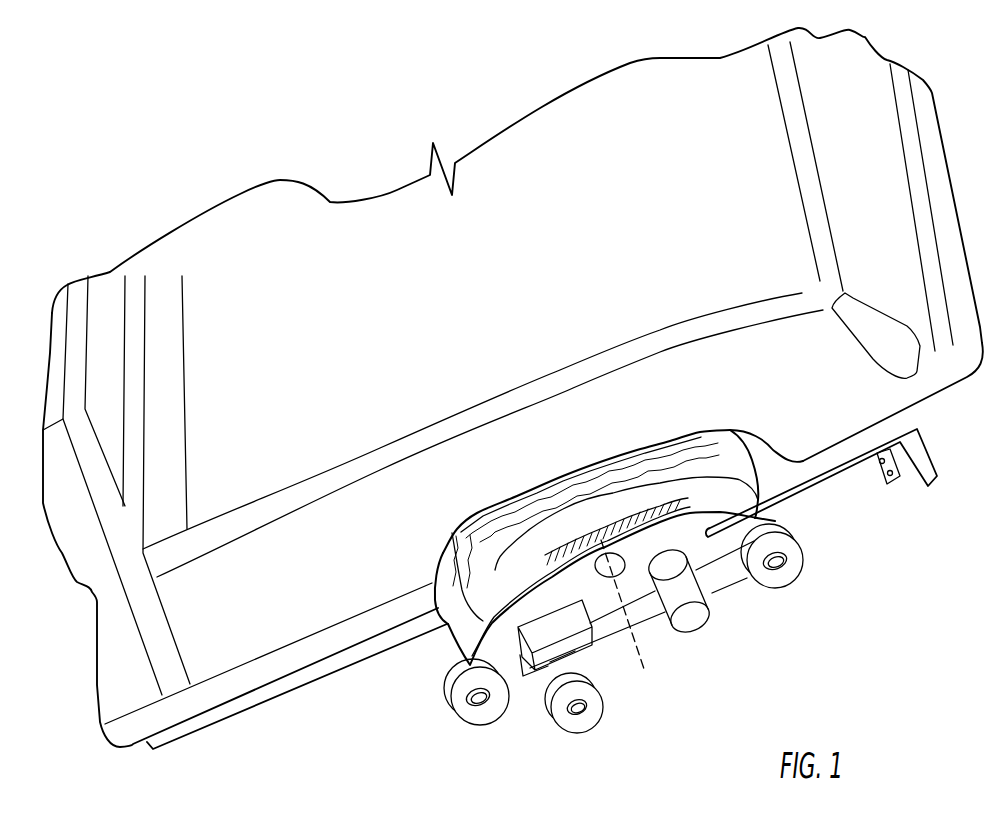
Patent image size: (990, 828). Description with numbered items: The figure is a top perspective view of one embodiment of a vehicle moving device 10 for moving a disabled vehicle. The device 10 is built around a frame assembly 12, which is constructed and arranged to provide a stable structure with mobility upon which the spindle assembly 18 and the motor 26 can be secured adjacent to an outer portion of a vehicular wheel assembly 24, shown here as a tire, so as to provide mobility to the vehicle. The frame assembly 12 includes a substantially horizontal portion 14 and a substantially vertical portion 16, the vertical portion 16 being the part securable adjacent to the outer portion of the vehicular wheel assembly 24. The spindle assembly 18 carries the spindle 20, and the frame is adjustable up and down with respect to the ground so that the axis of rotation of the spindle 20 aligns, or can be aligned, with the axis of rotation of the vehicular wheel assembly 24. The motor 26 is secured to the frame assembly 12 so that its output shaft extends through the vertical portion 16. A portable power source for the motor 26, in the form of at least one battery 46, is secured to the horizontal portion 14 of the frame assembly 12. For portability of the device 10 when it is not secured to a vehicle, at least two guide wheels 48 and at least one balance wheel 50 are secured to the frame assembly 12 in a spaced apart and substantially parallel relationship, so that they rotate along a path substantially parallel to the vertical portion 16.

The vehicle moving device 10 is at (678, 595).
The frame assembly 12 is at (733, 551).
The substantially horizontal portion 14 is at (643, 632).
The substantially vertical portion 16 is at (716, 528).
The spindle assembly 18 is at (601, 540).
The spindle 20 is at (650, 708).
The vehicular wheel assembly 24 is at (747, 473).
The motor 26 is at (687, 623).
The battery 46 is at (523, 679).
The guide wheels 48 is at (457, 720).
The balance wheel 50 is at (568, 729).